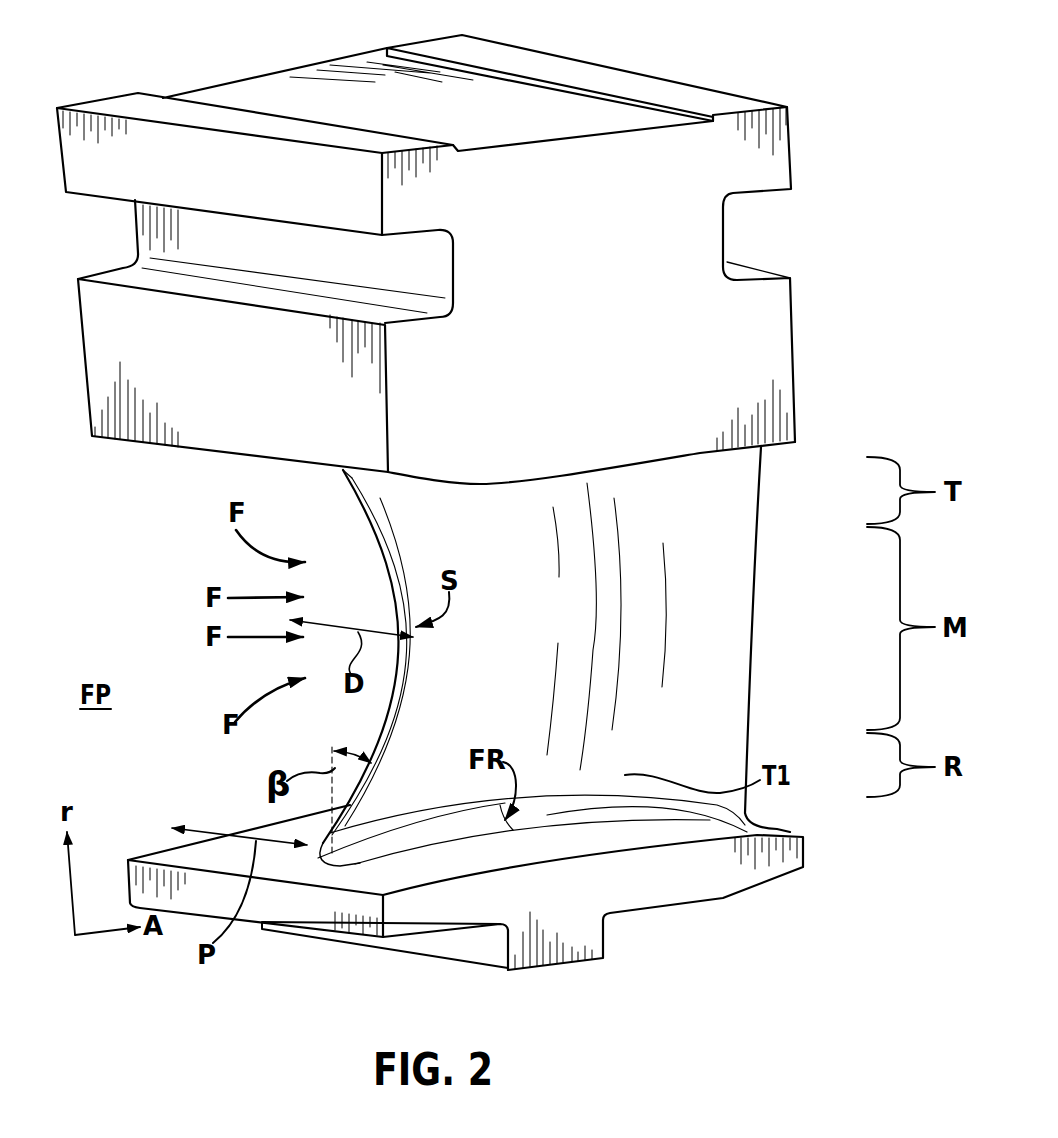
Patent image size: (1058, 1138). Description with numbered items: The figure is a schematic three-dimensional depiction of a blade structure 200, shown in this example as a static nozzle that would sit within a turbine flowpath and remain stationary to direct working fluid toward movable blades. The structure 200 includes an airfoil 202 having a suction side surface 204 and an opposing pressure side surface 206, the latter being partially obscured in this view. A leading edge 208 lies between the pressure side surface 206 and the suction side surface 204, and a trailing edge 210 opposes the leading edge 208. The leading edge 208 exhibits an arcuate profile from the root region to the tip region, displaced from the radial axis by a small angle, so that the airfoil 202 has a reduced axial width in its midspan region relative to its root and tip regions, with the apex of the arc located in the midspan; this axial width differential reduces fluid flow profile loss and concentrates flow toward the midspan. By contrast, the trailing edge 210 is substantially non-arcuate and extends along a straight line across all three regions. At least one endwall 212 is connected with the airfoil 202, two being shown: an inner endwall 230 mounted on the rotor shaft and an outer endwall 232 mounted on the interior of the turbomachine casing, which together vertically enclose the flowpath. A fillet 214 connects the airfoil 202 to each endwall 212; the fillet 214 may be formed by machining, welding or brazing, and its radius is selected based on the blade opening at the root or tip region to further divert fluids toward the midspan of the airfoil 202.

The blade structure 200 is at (456, 524).
The airfoil 202 is at (555, 656).
The suction side surface 204 is at (370, 567).
The pressure side surface 206 is at (706, 744).
The leading edge 208 is at (376, 743).
The trailing edge 210 is at (755, 553).
The endwall 212 is at (126, 411).
The fillet 214 is at (366, 478).
The inner endwall 230 is at (547, 948).
The outer endwall 232 is at (760, 143).